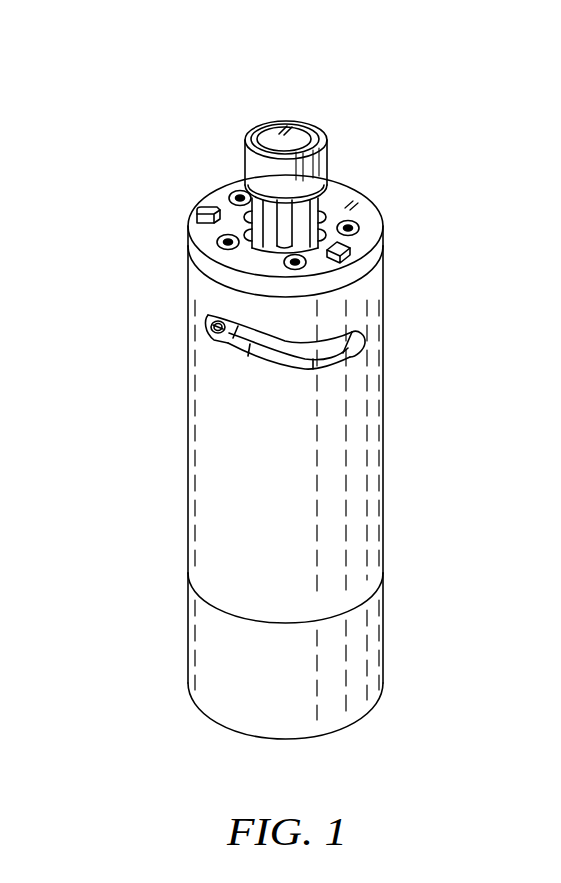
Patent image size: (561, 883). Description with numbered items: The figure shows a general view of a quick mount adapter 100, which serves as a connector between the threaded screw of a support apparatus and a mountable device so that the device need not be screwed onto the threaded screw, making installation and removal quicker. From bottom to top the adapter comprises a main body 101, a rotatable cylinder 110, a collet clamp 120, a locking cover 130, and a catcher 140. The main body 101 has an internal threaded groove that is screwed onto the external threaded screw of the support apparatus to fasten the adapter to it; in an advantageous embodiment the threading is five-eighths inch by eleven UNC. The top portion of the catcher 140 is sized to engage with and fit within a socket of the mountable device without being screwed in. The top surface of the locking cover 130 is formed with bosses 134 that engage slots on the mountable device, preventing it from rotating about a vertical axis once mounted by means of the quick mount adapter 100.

The quick mount adapter 100 is at (143, 97).
The main body 101 is at (378, 645).
The rotatable cylinder 110 is at (190, 455).
The collet clamp 120 is at (325, 212).
The locking cover 130 is at (373, 225).
The bosses 134 is at (330, 247).
The catcher 140 is at (270, 120).